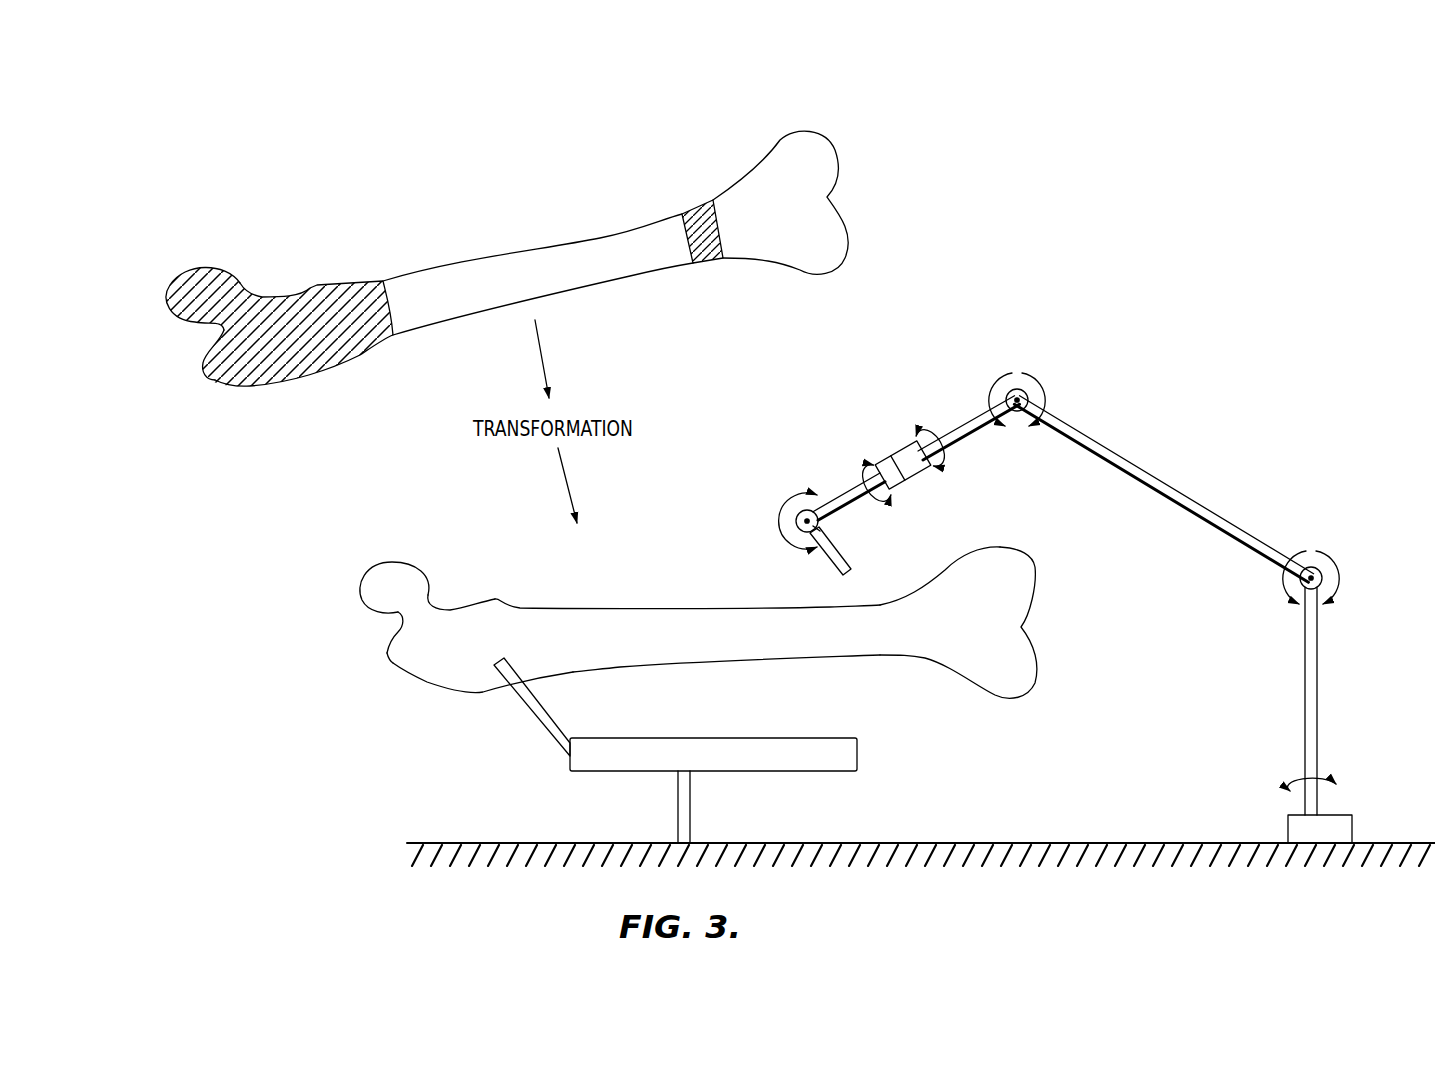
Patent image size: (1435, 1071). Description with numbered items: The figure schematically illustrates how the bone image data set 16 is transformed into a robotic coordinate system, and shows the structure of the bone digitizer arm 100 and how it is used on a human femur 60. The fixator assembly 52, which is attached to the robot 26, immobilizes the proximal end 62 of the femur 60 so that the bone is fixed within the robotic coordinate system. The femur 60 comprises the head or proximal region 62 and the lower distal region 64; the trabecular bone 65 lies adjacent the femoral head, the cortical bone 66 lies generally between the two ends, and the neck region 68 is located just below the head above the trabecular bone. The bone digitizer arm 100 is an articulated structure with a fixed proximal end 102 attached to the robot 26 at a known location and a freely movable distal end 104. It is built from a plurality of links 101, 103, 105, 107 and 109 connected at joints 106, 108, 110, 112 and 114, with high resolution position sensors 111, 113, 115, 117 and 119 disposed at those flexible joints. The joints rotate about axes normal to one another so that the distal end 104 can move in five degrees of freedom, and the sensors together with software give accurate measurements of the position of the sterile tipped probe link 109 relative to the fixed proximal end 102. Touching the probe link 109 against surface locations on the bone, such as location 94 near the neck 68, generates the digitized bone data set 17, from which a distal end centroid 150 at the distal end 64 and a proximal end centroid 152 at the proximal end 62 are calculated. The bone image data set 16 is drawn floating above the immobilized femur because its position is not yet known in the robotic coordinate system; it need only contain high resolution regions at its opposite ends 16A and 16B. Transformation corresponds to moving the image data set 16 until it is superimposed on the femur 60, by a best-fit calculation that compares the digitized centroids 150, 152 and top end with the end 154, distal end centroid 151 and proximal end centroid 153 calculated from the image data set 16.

The bone image data set 16 is at (142, 232).
The proximal end region of bone image data set 16A is at (287, 272).
The distal end region of bone image data set 16B is at (692, 198).
The distal end centroid of bone image data set 151 is at (704, 258).
The proximal end centroid of bone image data set 153 is at (205, 292).
The end of bone in bone image data set 154 is at (208, 366).
The digitized bone data set 17 is at (270, 575).
The proximal end of femur 62 is at (393, 558).
The neck region 68 is at (384, 626).
The proximal end centroid 152 is at (420, 608).
The surface location 94 is at (387, 658).
The trabecular bone 65 is at (420, 655).
The cortical bone 66 is at (699, 632).
The femur 60 is at (633, 657).
The distal end centroid 150 is at (908, 625).
The distal end of femur 64 is at (1044, 649).
The fixator assembly 52 is at (766, 765).
The robot 26 is at (1026, 822).
The bone digitizer arm 100 is at (1154, 398).
The link 101 is at (1304, 712).
The fixed proximal end 102 is at (1375, 820).
The link 103 is at (1197, 496).
The distal end 104 is at (786, 532).
The link 105 is at (957, 425).
The joint 106 is at (1320, 817).
The link 107 is at (850, 485).
The joint 108 is at (1333, 574).
The sterile tipped probe link 109 is at (840, 550).
The joint 110 is at (1025, 378).
The position sensor 111 is at (1301, 811).
The joint 112 is at (896, 444).
The position sensor 113 is at (1291, 602).
The joint 114 is at (800, 498).
The position sensor 115 is at (1020, 412).
The position sensor 117 is at (921, 486).
The position sensor 119 is at (823, 526).